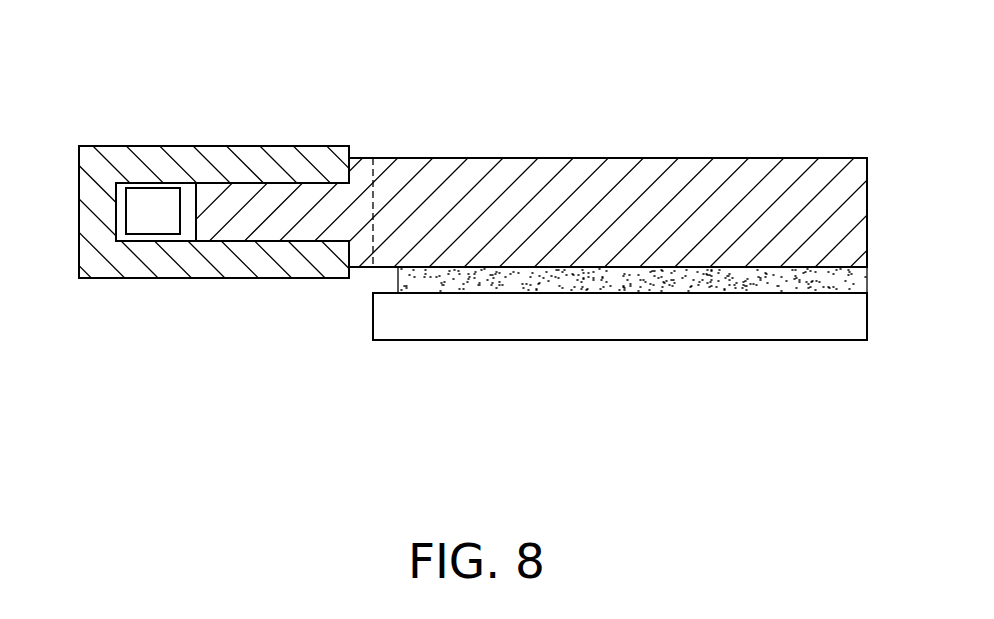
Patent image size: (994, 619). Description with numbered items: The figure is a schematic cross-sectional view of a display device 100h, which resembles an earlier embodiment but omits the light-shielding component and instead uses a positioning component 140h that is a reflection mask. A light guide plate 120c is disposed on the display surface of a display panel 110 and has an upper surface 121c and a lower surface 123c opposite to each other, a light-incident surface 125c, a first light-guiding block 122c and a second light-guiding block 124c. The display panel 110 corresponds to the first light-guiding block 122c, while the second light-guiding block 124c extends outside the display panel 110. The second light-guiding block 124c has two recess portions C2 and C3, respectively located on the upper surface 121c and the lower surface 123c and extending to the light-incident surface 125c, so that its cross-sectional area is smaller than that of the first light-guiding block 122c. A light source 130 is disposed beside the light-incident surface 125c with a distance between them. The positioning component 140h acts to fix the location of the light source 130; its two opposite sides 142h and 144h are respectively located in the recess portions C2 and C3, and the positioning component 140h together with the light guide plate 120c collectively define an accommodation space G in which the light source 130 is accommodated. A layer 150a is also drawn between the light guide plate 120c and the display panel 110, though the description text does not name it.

The display device 100h is at (829, 371).
The display panel 110 is at (852, 318).
The light guide plate 120c is at (477, 91).
The upper surface 121c is at (824, 148).
The first light-guiding block 122c is at (465, 172).
The lower surface 123c is at (813, 272).
The second light-guiding block 124c is at (368, 170).
The light-incident surface 125c is at (191, 228).
The light source 130 is at (154, 207).
The positioning component 140h is at (62, 212).
The side of positioning component 142h is at (222, 165).
The side of positioning component 144h is at (245, 263).
The adhesive layer 150a is at (470, 277).
The accommodation space G is at (187, 209).
The recess portion C2 is at (328, 171).
The recess portion C3 is at (311, 257).